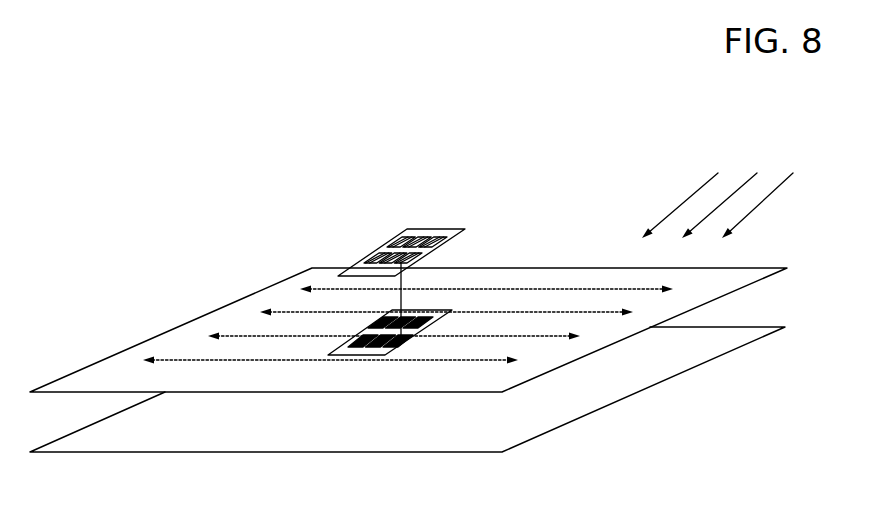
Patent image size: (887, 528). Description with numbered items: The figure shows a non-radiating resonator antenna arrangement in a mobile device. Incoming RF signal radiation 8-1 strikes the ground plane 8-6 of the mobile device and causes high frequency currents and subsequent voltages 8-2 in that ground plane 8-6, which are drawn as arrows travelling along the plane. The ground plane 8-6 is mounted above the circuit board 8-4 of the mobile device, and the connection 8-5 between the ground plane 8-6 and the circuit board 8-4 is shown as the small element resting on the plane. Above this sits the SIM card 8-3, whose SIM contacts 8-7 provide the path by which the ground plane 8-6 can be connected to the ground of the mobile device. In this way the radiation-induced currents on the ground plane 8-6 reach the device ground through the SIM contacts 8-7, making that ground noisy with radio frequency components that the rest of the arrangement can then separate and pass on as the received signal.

The RF signal radiation 8-1 is at (717, 185).
The high frequency currents and voltages 8-2 is at (518, 288).
The SIM card 8-3 is at (445, 228).
The circuit board 8-4 is at (582, 400).
The connection of ground plane to circuit board 8-5 is at (387, 342).
The ground plane 8-6 is at (605, 332).
The SIM contacts 8-7 is at (340, 352).